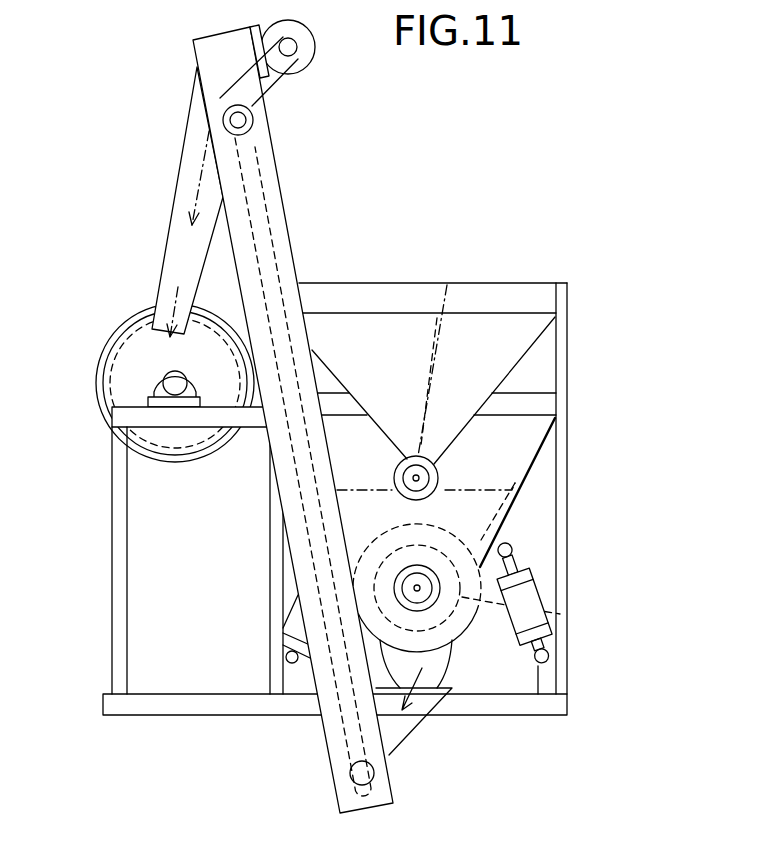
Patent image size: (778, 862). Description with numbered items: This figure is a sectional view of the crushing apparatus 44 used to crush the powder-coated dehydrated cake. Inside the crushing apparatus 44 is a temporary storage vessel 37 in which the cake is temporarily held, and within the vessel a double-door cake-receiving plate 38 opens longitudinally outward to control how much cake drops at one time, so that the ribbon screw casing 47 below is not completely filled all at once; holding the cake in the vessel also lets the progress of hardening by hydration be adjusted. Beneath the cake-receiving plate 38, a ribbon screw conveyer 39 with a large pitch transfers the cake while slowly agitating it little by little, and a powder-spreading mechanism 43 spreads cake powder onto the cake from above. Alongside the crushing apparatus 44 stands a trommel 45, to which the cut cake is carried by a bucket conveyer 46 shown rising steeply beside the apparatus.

The temporary storage vessel 37 is at (542, 465).
The cake-receiving plate 38 is at (496, 518).
The ribbon screw conveyer 39 is at (543, 612).
The powder-spreading mechanism 43 is at (497, 372).
The crushing apparatus 44 is at (614, 420).
The trommel 45 is at (100, 350).
The bucket conveyer 46 is at (270, 232).
The ribbon screw casing 47 is at (472, 523).